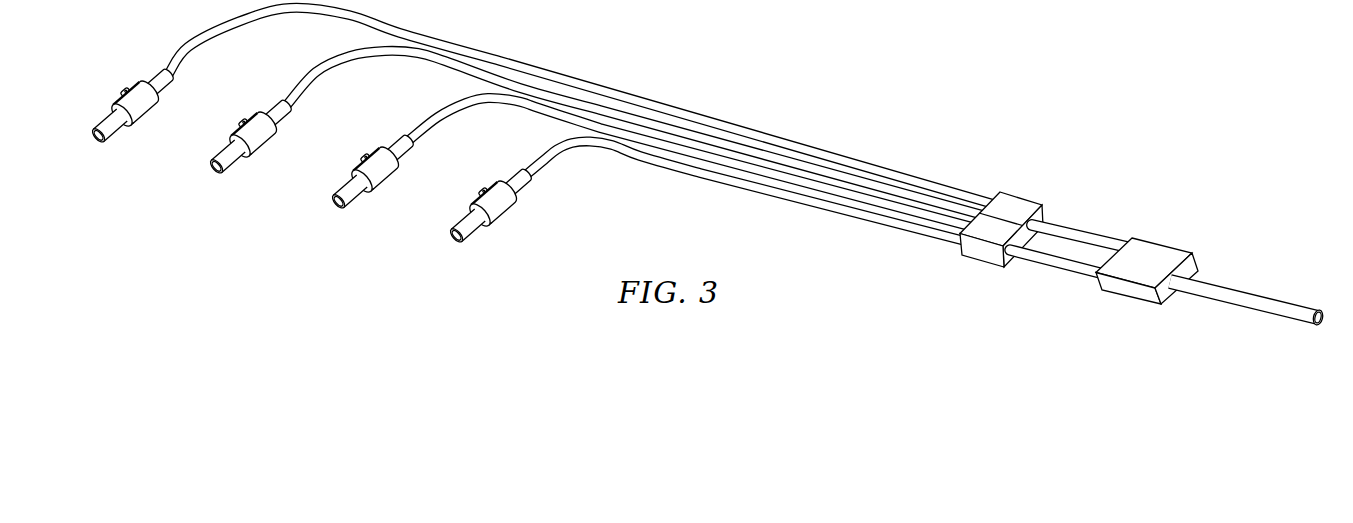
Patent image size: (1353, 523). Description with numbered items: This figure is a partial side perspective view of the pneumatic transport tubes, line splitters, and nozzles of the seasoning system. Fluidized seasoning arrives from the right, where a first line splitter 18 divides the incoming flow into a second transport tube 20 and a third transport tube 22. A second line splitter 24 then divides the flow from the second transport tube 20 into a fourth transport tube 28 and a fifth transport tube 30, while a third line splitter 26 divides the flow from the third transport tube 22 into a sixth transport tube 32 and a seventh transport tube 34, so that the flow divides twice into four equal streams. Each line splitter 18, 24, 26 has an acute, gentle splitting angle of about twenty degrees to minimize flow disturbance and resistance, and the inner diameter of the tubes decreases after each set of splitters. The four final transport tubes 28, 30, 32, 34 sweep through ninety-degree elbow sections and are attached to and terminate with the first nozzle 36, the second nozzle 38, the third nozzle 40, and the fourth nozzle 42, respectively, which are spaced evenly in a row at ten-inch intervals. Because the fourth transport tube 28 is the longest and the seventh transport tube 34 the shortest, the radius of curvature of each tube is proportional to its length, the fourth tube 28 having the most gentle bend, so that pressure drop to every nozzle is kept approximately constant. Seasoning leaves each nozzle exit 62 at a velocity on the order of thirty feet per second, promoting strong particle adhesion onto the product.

The first line splitter 18 is at (1160, 253).
The second transport tube 20 is at (1079, 227).
The third transport tube 22 is at (1053, 268).
The second line splitter 24 is at (1018, 207).
The third line splitter 26 is at (982, 256).
The fourth transport tube 28 is at (237, 23).
The fifth transport tube 30 is at (344, 67).
The sixth transport tube 32 is at (470, 108).
The seventh transport tube 34 is at (545, 164).
The first nozzle 36 is at (116, 96).
The second nozzle 38 is at (238, 132).
The third nozzle 40 is at (363, 165).
The fourth nozzle 42 is at (478, 198).
The nozzle exit 62 is at (357, 211).